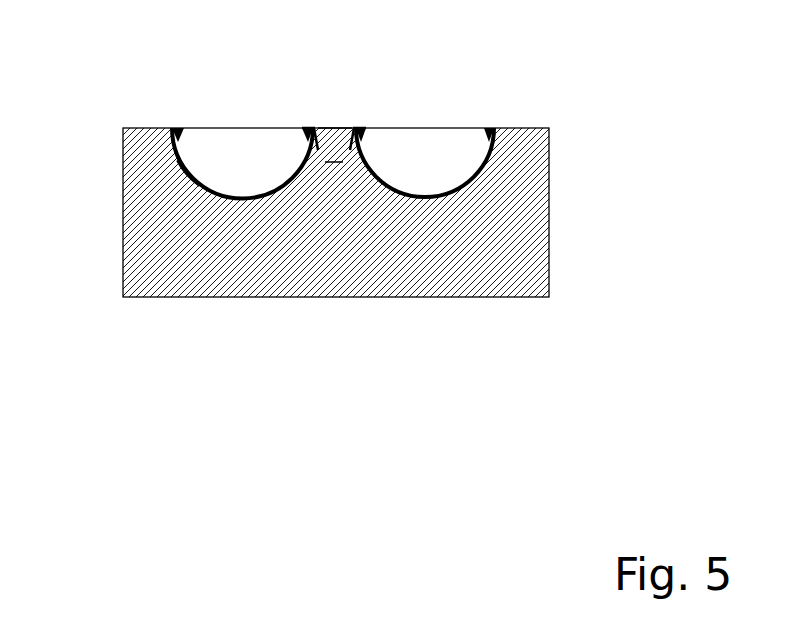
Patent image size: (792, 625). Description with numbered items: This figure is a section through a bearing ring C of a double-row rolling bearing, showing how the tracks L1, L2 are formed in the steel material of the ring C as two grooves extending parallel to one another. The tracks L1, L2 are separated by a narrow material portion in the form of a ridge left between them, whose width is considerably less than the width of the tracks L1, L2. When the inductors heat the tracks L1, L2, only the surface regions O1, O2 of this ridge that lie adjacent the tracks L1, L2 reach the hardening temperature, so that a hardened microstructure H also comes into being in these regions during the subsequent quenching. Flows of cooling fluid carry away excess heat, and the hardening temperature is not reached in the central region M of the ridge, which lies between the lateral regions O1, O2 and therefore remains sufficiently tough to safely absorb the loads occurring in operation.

The bearing ring C is at (530, 239).
The track L1 is at (253, 152).
The track L2 is at (427, 148).
The surface region O1 is at (308, 146).
The surface region O2 is at (366, 146).
The central region M is at (332, 130).
The hardened microstructure H is at (190, 177).